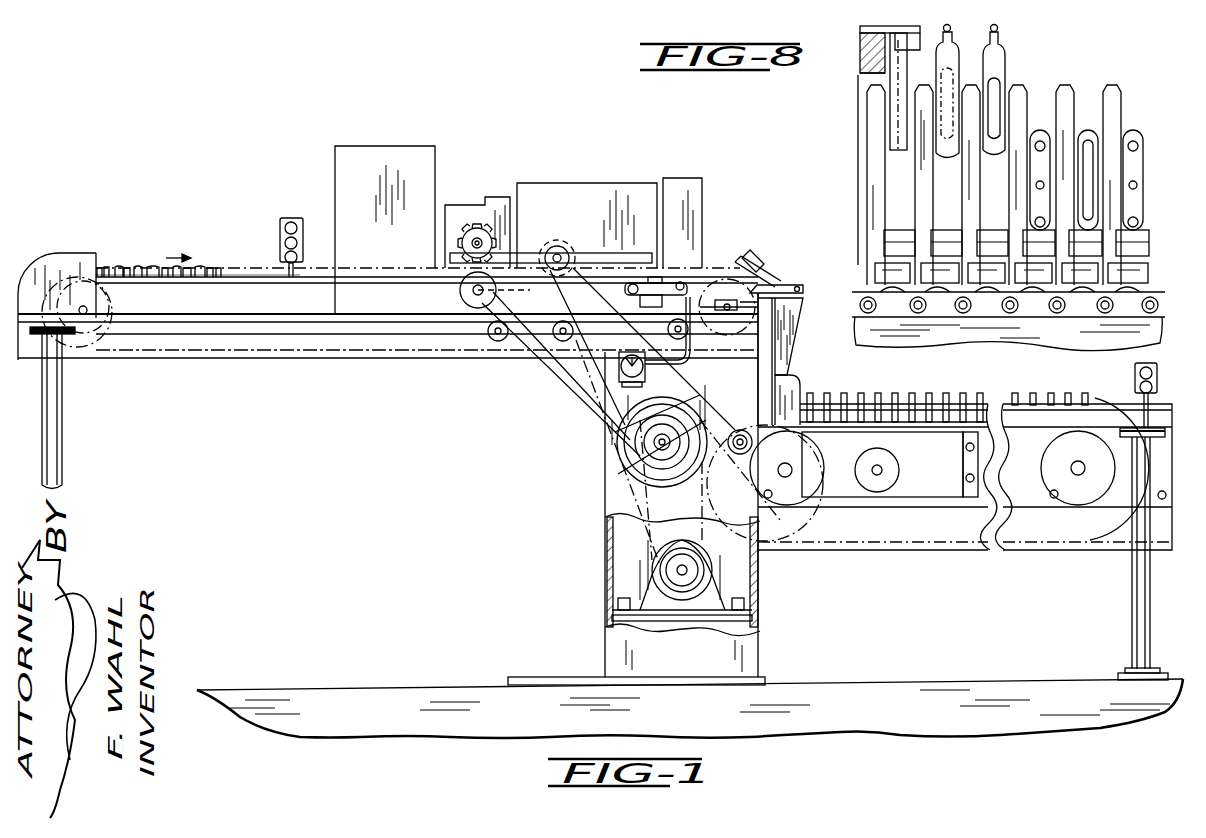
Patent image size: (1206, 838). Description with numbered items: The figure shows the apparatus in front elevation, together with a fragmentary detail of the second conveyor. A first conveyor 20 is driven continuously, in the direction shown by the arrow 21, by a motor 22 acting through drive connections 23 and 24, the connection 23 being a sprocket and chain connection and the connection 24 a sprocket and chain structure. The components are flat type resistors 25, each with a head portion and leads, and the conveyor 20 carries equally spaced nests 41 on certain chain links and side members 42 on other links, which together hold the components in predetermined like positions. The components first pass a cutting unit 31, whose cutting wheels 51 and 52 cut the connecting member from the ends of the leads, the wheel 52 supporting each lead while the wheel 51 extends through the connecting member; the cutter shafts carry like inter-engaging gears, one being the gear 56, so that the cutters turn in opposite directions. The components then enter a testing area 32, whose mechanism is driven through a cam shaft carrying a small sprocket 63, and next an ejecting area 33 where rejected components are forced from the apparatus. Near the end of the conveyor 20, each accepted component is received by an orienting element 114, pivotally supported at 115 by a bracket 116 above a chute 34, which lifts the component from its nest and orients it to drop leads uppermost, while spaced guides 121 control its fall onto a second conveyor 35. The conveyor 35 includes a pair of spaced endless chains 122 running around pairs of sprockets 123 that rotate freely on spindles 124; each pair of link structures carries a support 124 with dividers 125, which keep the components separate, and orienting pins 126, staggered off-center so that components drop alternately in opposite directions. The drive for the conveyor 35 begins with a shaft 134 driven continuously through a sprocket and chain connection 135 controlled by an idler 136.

In FIG. 1, the first conveyor 20 is at (226, 342).
In FIG. 1, the arrow 21 is at (180, 244).
In FIG. 1, the motor 22 is at (610, 603).
In FIG. 1, the drive connection 23 is at (650, 482).
In FIG. 1, the drive connection 24 is at (716, 375).
In FIG. 8, the flat type resistor 25 is at (985, 56).
In FIG. 1, the cutting unit 31 is at (456, 207).
In FIG. 1, the testing area 32 is at (600, 186).
In FIG. 1, the ejecting area 33 is at (705, 195).
In FIG. 1, the chute 34 is at (790, 340).
In FIG. 1, the second conveyor 35 is at (913, 394).
In FIG. 1, the nest 41 is at (128, 272).
In FIG. 1, the side member 42 is at (204, 271).
In FIG. 1, the cutting wheel 51 is at (480, 232).
In FIG. 1, the cutting wheel 52 is at (462, 281).
In FIG. 1, the gear 56 is at (497, 290).
In FIG. 1, the sprocket 63 is at (565, 251).
In FIG. 1, the orienting element 114 is at (775, 264).
In FIG. 1, the pivot 115 is at (805, 291).
In FIG. 1, the bracket 116 is at (779, 284).
In FIG. 1, the spaced guides 121 is at (782, 365).
In FIG. 8, the endless chains 122 is at (1058, 311).
In FIG. 1, the sprockets 123 is at (810, 441).
In FIG. 1, the spindle 124 is at (792, 470).
In FIG. 8, the spindle 124 is at (1148, 272).
In FIG. 1, the divider 125 is at (1084, 398).
In FIG. 8, the divider 125 is at (1110, 90).
In FIG. 8, the orienting pin 126 is at (884, 240).
In FIG. 1, the shaft 134 is at (882, 470).
In FIG. 1, the sprocket and chain connection 135 is at (748, 448).
In FIG. 1, the idler 136 is at (740, 428).